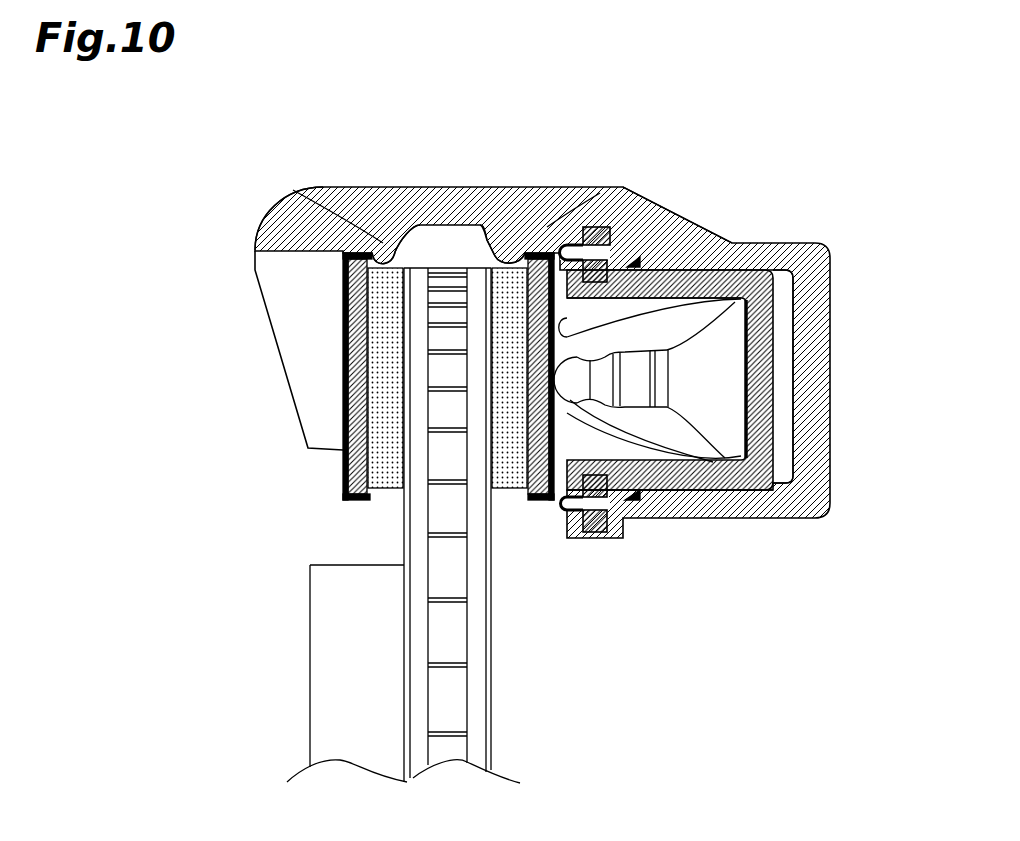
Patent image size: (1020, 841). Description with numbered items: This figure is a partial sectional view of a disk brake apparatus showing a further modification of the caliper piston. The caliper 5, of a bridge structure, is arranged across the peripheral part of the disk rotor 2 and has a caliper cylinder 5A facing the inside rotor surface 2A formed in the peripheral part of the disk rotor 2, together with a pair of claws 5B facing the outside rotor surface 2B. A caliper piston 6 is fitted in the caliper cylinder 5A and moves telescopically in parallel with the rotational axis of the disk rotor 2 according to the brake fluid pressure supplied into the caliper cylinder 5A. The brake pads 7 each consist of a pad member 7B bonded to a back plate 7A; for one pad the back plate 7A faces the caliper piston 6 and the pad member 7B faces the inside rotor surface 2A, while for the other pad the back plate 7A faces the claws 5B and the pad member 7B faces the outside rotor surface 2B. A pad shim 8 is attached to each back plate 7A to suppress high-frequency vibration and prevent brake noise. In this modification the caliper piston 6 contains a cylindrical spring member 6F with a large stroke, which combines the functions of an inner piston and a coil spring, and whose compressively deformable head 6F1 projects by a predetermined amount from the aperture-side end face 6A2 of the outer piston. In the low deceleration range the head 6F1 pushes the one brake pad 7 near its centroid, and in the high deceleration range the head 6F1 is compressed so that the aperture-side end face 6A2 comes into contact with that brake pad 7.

The disk rotor 2 is at (414, 525).
The inside rotor surface 2A is at (488, 507).
The outside rotor surface 2B is at (405, 507).
The caliper 5 is at (657, 203).
The caliper cylinder 5A is at (830, 341).
The claws 5B is at (285, 368).
The caliper piston 6 is at (778, 393).
The aperture-side end face 6A2 is at (683, 297).
The cylindrical spring member 6F is at (727, 477).
The head 6F1 is at (658, 480).
The brake pads 7 is at (410, 131).
The back plate 7A is at (300, 197).
The pad member 7B is at (380, 189).
The pad shim 8 is at (340, 477).